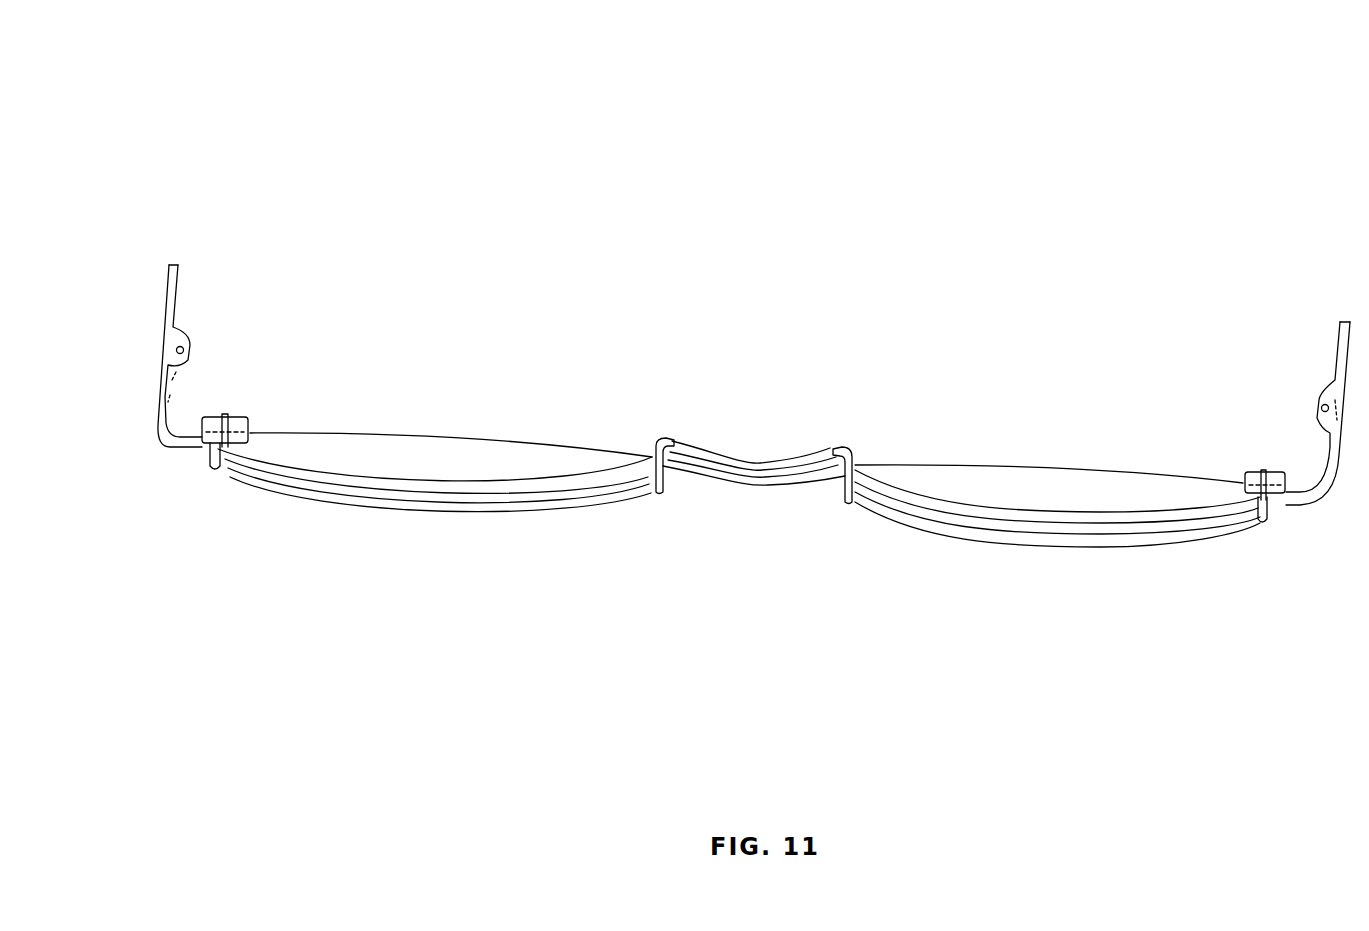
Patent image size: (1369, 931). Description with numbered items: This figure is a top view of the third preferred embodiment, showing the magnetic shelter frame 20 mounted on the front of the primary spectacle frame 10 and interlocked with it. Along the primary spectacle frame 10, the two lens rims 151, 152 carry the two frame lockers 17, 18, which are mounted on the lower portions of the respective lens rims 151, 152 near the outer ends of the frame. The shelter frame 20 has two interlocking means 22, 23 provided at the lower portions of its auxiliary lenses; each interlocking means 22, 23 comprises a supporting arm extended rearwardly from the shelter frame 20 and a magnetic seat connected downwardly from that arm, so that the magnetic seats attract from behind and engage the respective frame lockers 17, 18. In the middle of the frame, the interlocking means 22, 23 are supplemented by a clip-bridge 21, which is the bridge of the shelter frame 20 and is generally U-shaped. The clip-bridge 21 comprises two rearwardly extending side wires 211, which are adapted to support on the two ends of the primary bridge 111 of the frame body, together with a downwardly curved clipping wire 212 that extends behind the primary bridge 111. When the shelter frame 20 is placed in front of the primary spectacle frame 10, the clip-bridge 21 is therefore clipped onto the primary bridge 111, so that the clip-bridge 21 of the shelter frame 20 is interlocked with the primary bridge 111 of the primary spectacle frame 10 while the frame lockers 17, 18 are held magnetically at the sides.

The primary spectacle frame 10 is at (754, 361).
The frame locker 17 is at (1272, 495).
The frame locker 18 is at (212, 440).
The magnetic shelter frame 20 is at (417, 538).
The clip-bridge 21 is at (767, 338).
The interlocking means 22 is at (229, 408).
The interlocking means 23 is at (1273, 455).
The primary bridge 111 is at (770, 507).
The lens rim 151 is at (415, 482).
The lens rim 152 is at (967, 502).
The side wire 211 is at (690, 450).
The clipping wire 212 is at (762, 457).